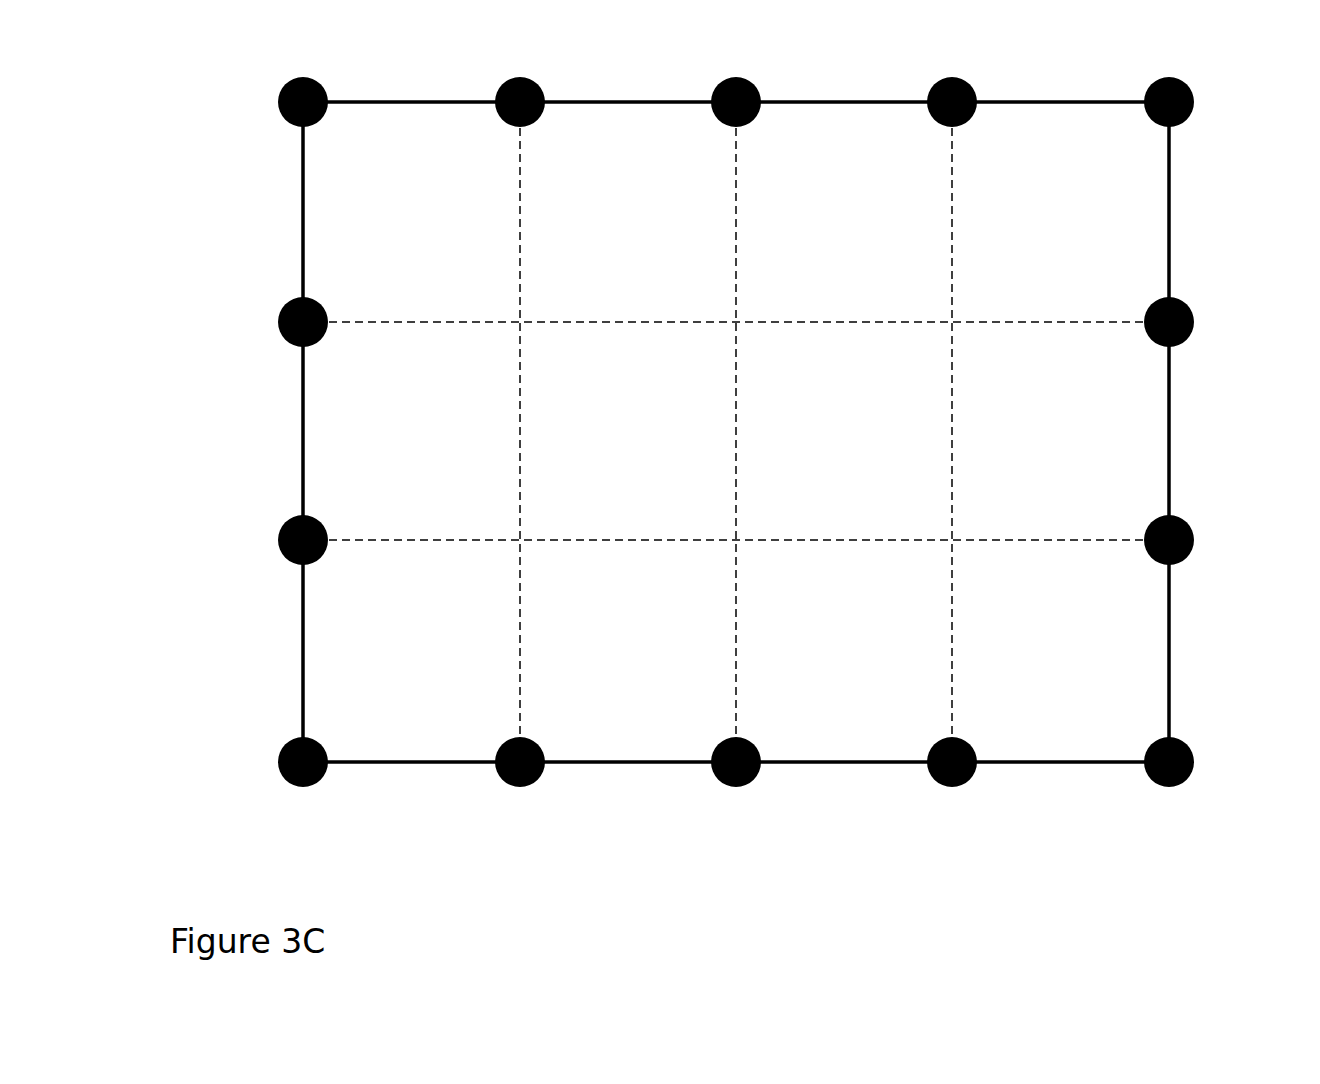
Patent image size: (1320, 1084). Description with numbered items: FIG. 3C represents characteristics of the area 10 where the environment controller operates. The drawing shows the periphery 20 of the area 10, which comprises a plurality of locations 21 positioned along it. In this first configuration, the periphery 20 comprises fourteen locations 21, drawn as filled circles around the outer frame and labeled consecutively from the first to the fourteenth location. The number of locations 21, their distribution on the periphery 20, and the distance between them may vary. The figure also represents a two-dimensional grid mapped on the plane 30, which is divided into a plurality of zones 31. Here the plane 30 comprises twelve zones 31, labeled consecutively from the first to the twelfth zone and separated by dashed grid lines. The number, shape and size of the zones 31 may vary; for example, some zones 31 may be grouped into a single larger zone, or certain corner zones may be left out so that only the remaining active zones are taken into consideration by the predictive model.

The area 10 is at (703, 439).
The periphery 20 is at (1170, 182).
The locations 21 is at (1192, 88).
The plane 30 is at (1087, 275).
The zones 31 is at (1018, 295).